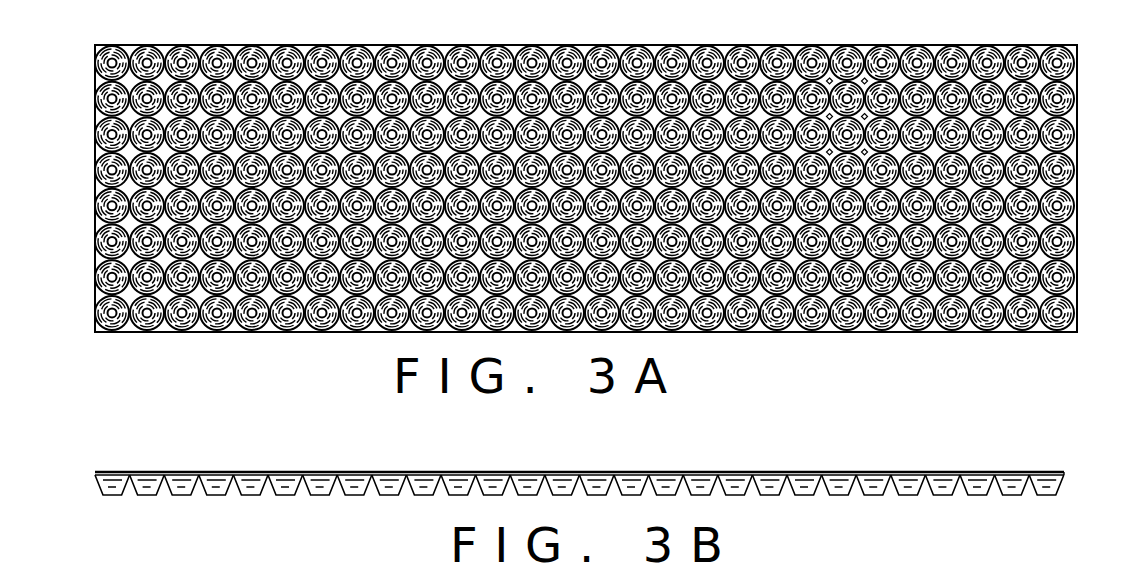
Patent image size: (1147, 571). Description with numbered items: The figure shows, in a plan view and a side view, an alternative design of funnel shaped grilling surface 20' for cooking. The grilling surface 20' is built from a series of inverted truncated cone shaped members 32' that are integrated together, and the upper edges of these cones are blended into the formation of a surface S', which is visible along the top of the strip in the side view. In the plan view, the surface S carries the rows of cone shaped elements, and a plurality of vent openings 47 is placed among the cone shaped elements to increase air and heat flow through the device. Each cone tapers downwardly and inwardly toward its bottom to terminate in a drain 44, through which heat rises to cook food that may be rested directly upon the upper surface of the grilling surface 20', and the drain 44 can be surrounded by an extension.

In FIG. 3A, the vent openings 47 is at (832, 80).
In FIG. 3A, the drain 44 is at (253, 310).
In FIG. 3A, the inverted truncated cone shaped members 32' is at (340, 336).
In FIG. 3B, the inverted truncated cone shaped members 32' is at (253, 507).
In FIG. 3A, the surface S is at (586, 205).
In FIG. 3B, the surface S' is at (579, 446).
In FIG. 3B, the grilling surface 20' is at (1091, 452).